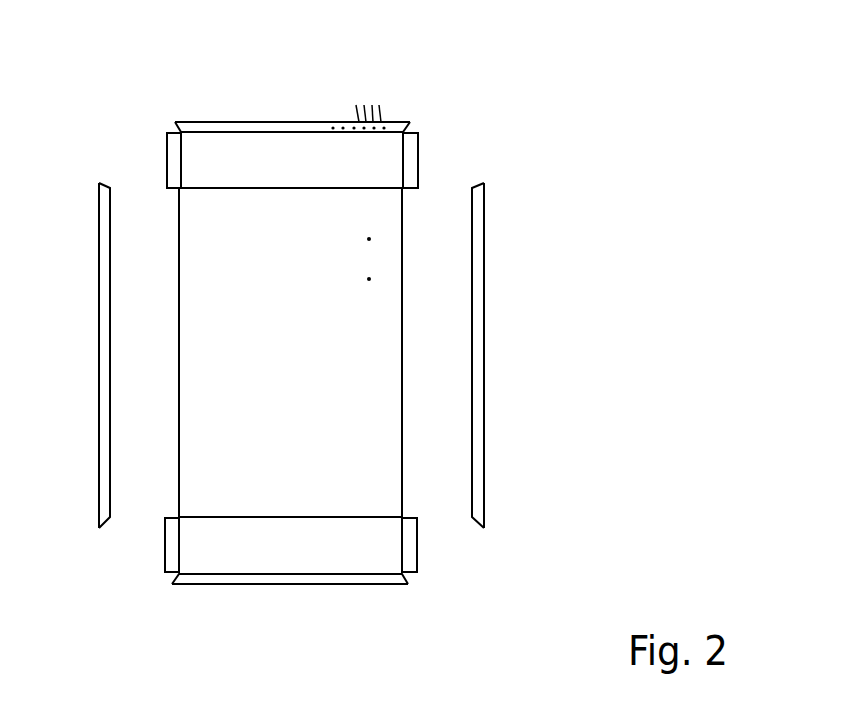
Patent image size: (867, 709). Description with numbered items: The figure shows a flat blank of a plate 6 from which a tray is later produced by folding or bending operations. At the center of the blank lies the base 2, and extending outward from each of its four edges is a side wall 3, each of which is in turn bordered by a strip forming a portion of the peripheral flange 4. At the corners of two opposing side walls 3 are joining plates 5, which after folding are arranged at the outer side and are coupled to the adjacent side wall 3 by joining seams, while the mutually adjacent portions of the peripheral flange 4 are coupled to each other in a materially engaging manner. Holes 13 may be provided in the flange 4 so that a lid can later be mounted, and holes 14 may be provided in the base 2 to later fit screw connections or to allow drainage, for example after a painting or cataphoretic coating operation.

The base 2 is at (316, 415).
The side wall 3 is at (193, 140).
The peripheral flange 4 is at (292, 122).
The joining plate 5 is at (172, 160).
The plate 6 is at (94, 104).
The holes 13 is at (360, 99).
The holes 14 is at (375, 239).